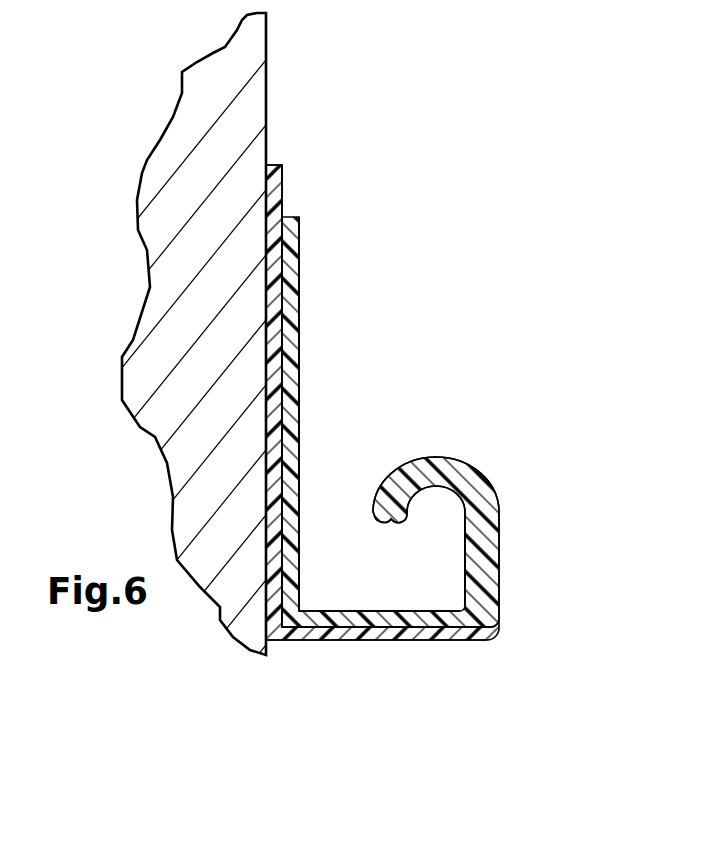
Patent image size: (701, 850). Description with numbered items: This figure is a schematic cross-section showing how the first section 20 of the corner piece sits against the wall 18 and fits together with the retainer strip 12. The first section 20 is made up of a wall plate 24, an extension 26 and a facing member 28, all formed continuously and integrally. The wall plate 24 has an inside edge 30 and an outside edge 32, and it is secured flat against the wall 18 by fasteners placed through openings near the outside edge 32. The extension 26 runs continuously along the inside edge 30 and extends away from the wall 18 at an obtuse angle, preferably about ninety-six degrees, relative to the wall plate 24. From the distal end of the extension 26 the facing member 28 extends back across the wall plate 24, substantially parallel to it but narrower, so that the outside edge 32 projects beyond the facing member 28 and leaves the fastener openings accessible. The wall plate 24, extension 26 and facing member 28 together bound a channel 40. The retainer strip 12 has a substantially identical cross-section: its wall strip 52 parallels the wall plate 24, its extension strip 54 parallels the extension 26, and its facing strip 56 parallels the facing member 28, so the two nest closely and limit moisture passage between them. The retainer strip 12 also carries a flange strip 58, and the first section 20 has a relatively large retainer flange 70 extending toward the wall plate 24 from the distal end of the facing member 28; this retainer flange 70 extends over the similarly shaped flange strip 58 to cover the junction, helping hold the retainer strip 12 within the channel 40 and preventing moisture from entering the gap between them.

The wall 18 is at (248, 108).
The first section 20 is at (362, 175).
The outside edge 32 is at (273, 166).
The inside edge 30 is at (280, 639).
The extension 26 is at (360, 632).
The retainer strip 12 is at (376, 270).
The wall plate 24 is at (273, 244).
The wall strip 52 is at (289, 320).
The extension strip 54 is at (438, 618).
The facing member 28 is at (489, 581).
The facing strip 56 is at (472, 546).
The flange strip 58 is at (456, 474).
The retainer flange 70 is at (425, 467).
The channel 40 is at (366, 582).